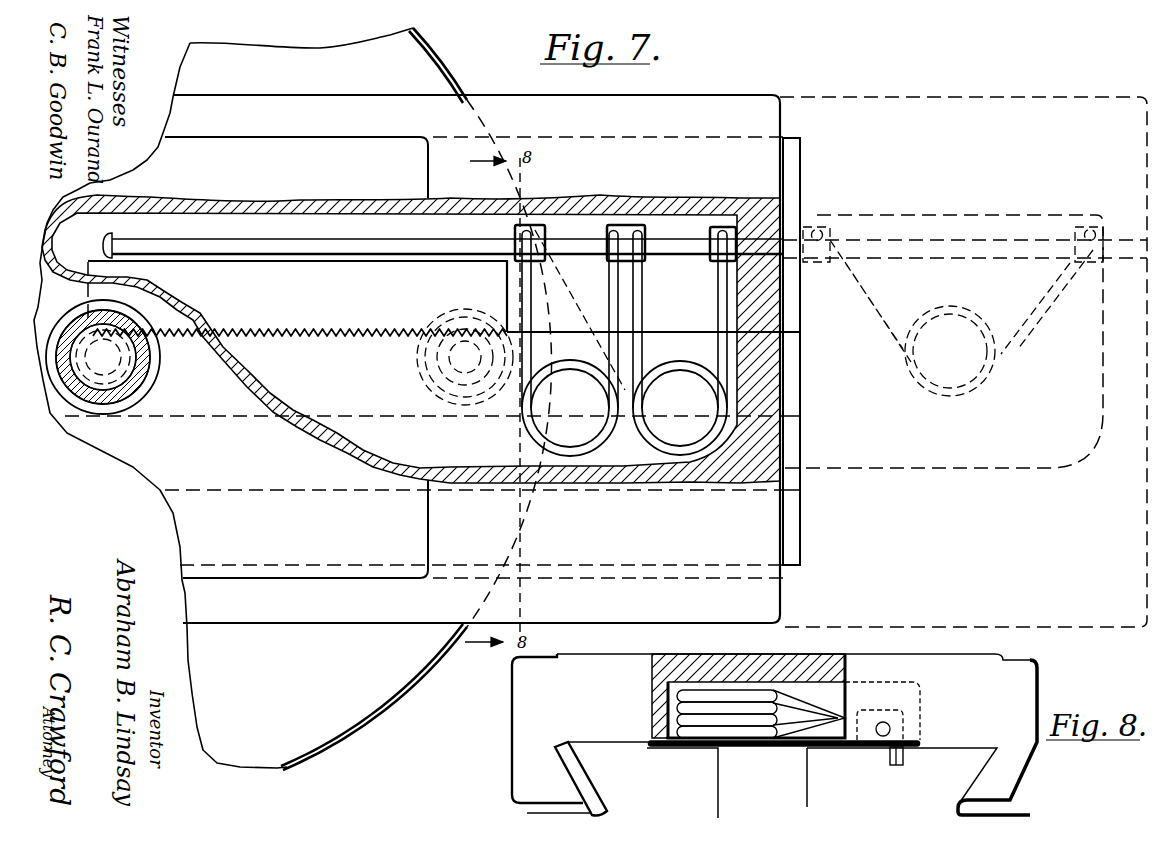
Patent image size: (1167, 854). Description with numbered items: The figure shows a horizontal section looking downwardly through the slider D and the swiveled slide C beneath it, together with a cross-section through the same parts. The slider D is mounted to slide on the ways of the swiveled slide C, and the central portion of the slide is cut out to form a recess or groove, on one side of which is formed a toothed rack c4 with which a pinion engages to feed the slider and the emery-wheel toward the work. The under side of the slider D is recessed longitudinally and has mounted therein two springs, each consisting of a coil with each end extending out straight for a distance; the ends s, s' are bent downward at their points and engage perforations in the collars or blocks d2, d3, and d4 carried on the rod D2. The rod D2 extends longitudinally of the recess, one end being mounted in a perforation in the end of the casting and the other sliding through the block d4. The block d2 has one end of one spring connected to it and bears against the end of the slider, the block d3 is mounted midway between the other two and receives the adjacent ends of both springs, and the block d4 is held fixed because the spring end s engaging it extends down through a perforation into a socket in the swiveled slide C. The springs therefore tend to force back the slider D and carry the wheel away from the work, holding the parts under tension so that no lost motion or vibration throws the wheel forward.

In FIG. 7, the block d4 is at (541, 226).
In FIG. 7, the block d3 is at (630, 226).
In FIG. 7, the block d2 is at (717, 226).
In FIG. 7, the rod D2 is at (425, 248).
In FIG. 7, the toothed rack c4 is at (446, 319).
In FIG. 7, the end of the spring s is at (570, 408).
In FIG. 8, the end of the spring s is at (785, 739).
In FIG. 7, the end of the spring s' is at (680, 408).
In FIG. 8, the slider D is at (925, 712).
In FIG. 8, the swiveled slide C is at (822, 783).